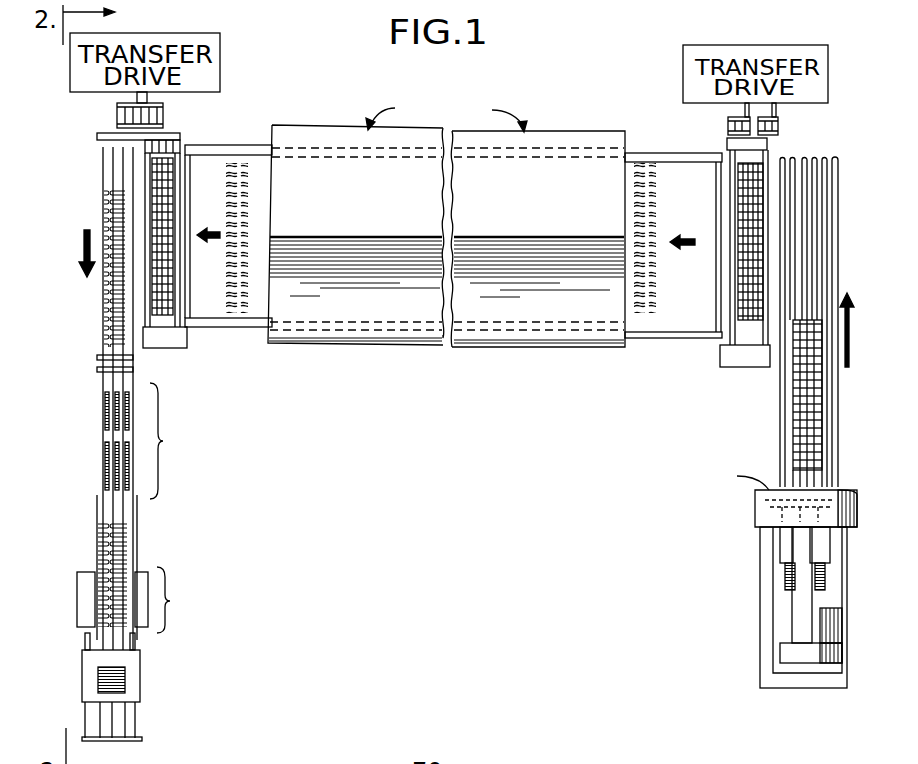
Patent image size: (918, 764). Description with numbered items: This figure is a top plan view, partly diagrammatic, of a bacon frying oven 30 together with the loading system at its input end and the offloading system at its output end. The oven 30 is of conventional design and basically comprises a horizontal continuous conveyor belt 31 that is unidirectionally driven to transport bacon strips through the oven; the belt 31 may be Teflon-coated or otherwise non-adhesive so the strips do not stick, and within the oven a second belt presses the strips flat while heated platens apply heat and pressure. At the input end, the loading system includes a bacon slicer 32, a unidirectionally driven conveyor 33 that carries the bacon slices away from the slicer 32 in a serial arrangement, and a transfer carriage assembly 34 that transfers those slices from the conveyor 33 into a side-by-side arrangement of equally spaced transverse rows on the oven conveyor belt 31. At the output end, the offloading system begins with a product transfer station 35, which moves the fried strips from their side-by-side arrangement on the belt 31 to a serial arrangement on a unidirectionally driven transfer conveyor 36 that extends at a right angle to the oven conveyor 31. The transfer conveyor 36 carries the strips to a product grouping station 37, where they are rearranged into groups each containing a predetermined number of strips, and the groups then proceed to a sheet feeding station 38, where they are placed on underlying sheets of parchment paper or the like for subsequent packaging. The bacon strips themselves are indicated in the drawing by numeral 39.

The bacon frying oven 30 is at (571, 118).
The conveyor belt 31 is at (262, 165).
The bacon slicer 32 is at (748, 508).
The conveyor 33 is at (776, 410).
The transfer carriage assembly 34 is at (776, 152).
The product transfer station 35 is at (183, 130).
The transfer conveyor 36 is at (90, 340).
The product grouping station 37 is at (88, 464).
The sheet feeding station 38 is at (68, 588).
The bacon strips 39 is at (248, 214).